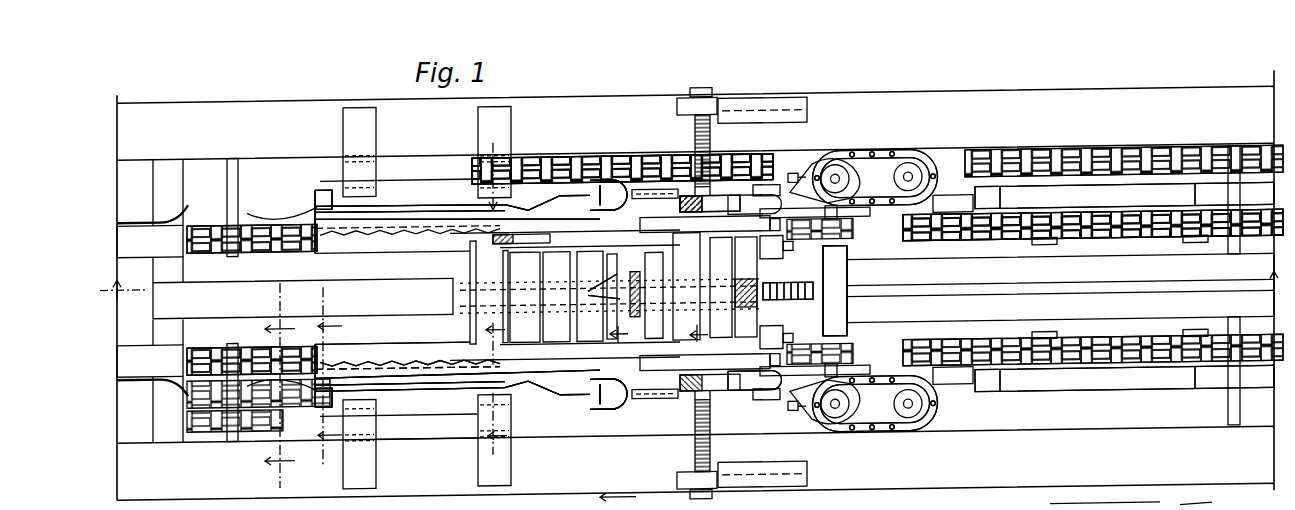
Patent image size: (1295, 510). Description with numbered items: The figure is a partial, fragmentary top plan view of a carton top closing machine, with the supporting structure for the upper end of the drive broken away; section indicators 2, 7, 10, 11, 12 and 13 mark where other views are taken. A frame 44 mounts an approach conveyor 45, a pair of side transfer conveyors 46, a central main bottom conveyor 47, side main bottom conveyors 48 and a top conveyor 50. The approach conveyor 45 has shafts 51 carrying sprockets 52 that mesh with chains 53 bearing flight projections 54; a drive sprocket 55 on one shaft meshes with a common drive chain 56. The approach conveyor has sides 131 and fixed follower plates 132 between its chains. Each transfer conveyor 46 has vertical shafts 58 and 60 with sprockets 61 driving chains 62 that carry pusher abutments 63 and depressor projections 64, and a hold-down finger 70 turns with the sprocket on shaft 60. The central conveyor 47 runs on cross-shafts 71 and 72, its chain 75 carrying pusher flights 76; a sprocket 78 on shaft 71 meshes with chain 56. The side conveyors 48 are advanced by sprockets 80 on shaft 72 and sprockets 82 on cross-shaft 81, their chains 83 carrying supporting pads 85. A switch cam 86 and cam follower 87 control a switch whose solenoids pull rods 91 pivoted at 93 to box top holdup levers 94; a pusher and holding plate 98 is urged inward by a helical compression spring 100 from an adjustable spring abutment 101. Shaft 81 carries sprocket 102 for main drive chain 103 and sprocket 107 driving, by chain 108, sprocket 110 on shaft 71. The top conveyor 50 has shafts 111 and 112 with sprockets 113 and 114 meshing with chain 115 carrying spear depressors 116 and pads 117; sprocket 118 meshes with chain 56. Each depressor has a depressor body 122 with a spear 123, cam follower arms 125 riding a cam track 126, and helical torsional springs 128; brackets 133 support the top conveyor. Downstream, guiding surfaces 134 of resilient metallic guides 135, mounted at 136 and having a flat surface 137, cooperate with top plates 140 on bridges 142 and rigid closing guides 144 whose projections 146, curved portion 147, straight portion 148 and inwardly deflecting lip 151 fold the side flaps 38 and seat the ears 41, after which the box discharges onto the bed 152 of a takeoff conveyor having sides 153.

The section line 2- 2 is at (694, 284).
The section arrow 7 is at (693, 334).
The section arrow 10 is at (617, 337).
The section line 11- 11 is at (520, 296).
The section line 12- 12 is at (347, 298).
The section line 13- 13 is at (272, 386).
The side flaps 38 is at (1105, 501).
The ears 41 is at (1203, 502).
The frame 44 is at (1040, 104).
The approach conveyor 45 is at (1150, 355).
The transfer conveyors 46 is at (902, 457).
The central main bottom conveyor 47 is at (462, 300).
The side main bottom conveyors 48 is at (857, 355).
The top conveyor 50 is at (804, 290).
The shafts 51 is at (1234, 258).
The sprockets 52 is at (1226, 380).
The chains 53 is at (1103, 380).
The flight projections 54 is at (1200, 346).
The drive sprocket 55 is at (1236, 176).
The drive chain 56 is at (1115, 170).
The vertical shafts 58 is at (914, 421).
The vertical shafts 60 is at (835, 430).
The sprockets 61 is at (912, 421).
The chains 62 is at (880, 446).
The pusher abutments 63 is at (857, 379).
The depressor projections 64 is at (790, 424).
The hold-down finger 70 is at (825, 291).
The cross-shaft 71 is at (520, 165).
The cross-shaft 72 is at (788, 472).
The chain 75 is at (836, 324).
The pusher flights 76 is at (846, 278).
The sprocket 78 is at (548, 170).
The sprockets 80 is at (848, 340).
The cross-shaft 81 is at (233, 447).
The sprockets 82 is at (227, 357).
The side main bottom conveyor chains 83 is at (762, 350).
The supporting pads 85 is at (762, 262).
The switch cam 86 is at (525, 297).
The switch operating cam follower 87 is at (492, 245).
The rods 91 is at (770, 405).
The pivotal connection 93 is at (668, 408).
The box top holdup levers 94 is at (760, 414).
The pusher and holding plate 98 is at (745, 404).
The helical compression spring 100 is at (695, 470).
The adjustable spring abutment 101 is at (690, 492).
The sprocket 102 is at (220, 425).
The main drive chain 103 is at (217, 437).
The sprocket 107 is at (285, 400).
The chain 108 is at (445, 415).
The sprocket 110 is at (572, 407).
The shaft 111 is at (803, 135).
The shaft 112 is at (698, 205).
The sprocket 113 is at (790, 312).
The sprocket 114 is at (592, 298).
The chain 115 is at (744, 287).
The spear depressors 116 is at (592, 296).
The pads 117 is at (655, 295).
The sprocket 118 is at (735, 170).
The depressor bodies 122 is at (612, 282).
The spear 123 is at (557, 297).
The cam follower arms 125 is at (681, 287).
The cam track 126 is at (728, 287).
The helical torsional springs 128 is at (650, 294).
The sides 131 is at (1180, 406).
The fixed follower plates 132 is at (1060, 287).
The brackets 133 is at (710, 301).
The inwardly guiding surfaces 134 is at (648, 294).
The resilient metallic guides 135 is at (526, 378).
The mounting 136 is at (603, 420).
The flat surface 137 is at (440, 361).
The top plates 140 is at (400, 358).
The bridges 142 is at (478, 477).
The side flap deflecting and closing guide 144 is at (404, 410).
The projections 146 is at (601, 188).
The curved portion 147 is at (494, 168).
The straight portion 148 is at (395, 210).
The inwardly deflecting lip 151 is at (288, 222).
The bed 152 is at (150, 301).
The sides 153 is at (136, 223).